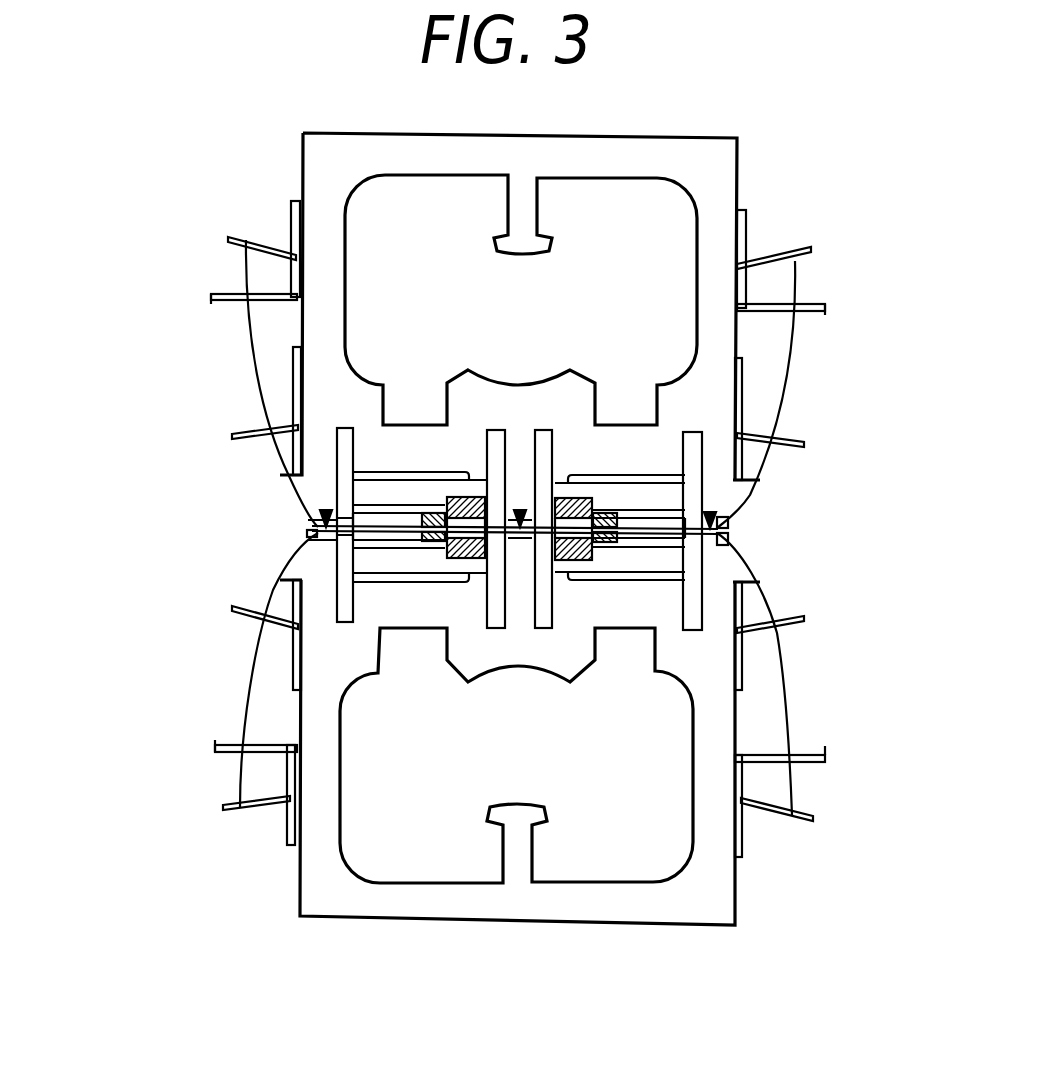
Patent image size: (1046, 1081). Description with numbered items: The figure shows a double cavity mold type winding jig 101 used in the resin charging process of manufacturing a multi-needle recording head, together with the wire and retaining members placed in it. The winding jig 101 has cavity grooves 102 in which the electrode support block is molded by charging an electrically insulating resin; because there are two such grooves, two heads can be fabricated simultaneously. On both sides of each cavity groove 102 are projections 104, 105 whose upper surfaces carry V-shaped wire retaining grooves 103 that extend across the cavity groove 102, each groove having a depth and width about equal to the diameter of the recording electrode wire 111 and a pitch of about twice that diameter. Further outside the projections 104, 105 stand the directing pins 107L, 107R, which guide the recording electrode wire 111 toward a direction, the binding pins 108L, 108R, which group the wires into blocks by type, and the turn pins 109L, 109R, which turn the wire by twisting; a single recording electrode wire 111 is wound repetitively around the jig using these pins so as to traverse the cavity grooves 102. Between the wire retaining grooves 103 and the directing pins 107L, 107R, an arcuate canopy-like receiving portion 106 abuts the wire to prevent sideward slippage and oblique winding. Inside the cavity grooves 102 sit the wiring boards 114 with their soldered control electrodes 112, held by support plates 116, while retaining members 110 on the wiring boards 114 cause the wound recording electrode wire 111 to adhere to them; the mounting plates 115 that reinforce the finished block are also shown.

The winding jig 101 is at (137, 683).
The cavity groove 102 is at (373, 472).
The wire retaining groove 103 is at (519, 510).
The projection 104 is at (520, 550).
The projection 105 is at (313, 537).
The receiving portion 106 is at (298, 562).
The directing pin 107L is at (233, 614).
The directing pin 107R is at (240, 437).
The binding pin 108L is at (217, 747).
The binding pin 108R is at (213, 297).
The turn pin 109L is at (808, 252).
The turn pin 109R is at (243, 239).
The retaining member 110 is at (434, 513).
The recording electrode wire 111 is at (267, 458).
The control electrode 112 is at (458, 497).
The wiring board 114 is at (400, 505).
The mounting plate 115 is at (362, 472).
The support plate 116 is at (345, 625).